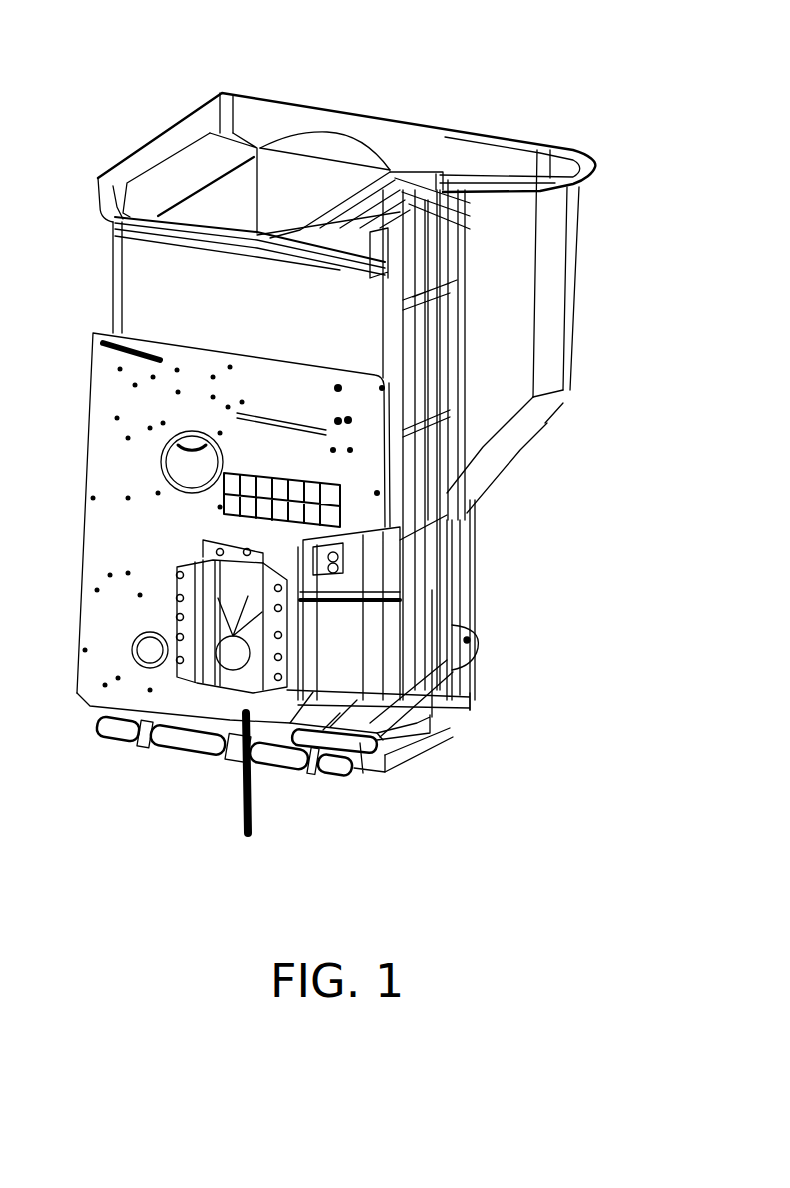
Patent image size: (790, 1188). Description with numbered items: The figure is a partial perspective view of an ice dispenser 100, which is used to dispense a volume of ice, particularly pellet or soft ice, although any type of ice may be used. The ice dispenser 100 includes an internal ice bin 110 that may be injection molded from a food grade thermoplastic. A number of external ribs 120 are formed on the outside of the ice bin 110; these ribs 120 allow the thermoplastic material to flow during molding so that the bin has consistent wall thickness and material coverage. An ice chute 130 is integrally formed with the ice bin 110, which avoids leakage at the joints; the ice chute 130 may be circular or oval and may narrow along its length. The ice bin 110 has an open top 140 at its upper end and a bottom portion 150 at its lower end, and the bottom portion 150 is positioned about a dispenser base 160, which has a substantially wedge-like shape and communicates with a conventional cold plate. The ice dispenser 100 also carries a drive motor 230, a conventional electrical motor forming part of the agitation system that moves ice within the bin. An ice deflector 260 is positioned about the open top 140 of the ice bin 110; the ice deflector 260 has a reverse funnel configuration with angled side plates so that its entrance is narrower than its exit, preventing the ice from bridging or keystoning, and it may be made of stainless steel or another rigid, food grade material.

The ice dispenser 100 is at (100, 83).
The ice bin 110 is at (570, 287).
The external ribs 120 is at (447, 594).
The ice chute 130 is at (185, 462).
The open top 140 is at (488, 155).
The bottom portion 150 is at (457, 663).
The dispenser base 160 is at (417, 737).
The drive motor 230 is at (223, 663).
The ice deflector 260 is at (416, 160).